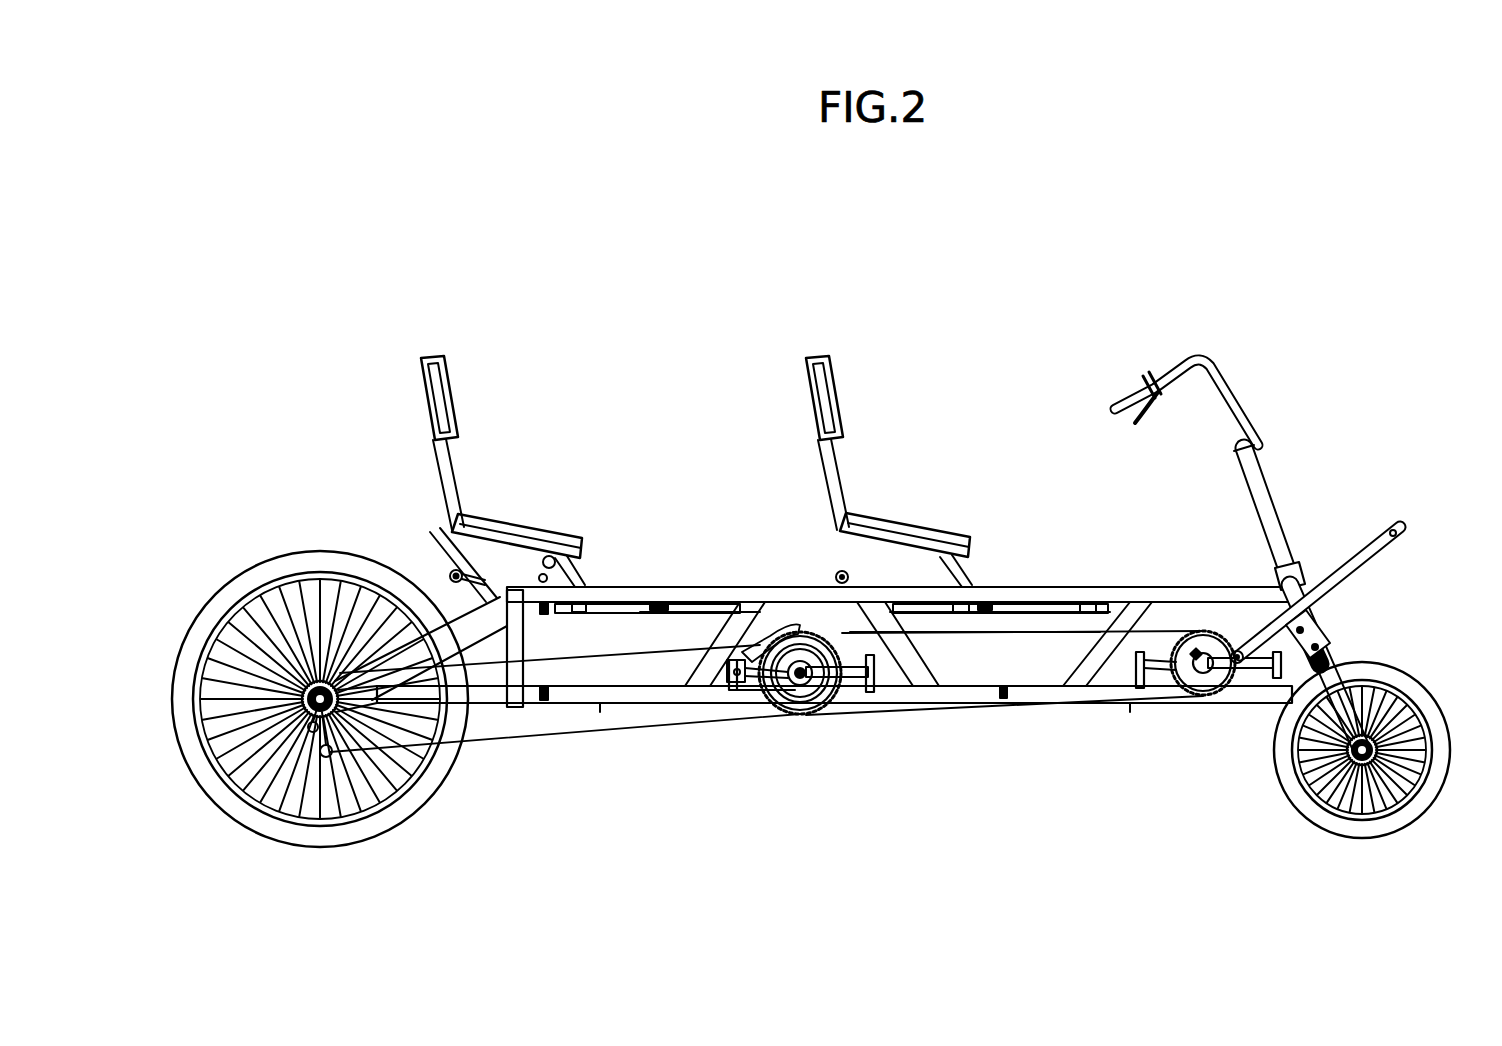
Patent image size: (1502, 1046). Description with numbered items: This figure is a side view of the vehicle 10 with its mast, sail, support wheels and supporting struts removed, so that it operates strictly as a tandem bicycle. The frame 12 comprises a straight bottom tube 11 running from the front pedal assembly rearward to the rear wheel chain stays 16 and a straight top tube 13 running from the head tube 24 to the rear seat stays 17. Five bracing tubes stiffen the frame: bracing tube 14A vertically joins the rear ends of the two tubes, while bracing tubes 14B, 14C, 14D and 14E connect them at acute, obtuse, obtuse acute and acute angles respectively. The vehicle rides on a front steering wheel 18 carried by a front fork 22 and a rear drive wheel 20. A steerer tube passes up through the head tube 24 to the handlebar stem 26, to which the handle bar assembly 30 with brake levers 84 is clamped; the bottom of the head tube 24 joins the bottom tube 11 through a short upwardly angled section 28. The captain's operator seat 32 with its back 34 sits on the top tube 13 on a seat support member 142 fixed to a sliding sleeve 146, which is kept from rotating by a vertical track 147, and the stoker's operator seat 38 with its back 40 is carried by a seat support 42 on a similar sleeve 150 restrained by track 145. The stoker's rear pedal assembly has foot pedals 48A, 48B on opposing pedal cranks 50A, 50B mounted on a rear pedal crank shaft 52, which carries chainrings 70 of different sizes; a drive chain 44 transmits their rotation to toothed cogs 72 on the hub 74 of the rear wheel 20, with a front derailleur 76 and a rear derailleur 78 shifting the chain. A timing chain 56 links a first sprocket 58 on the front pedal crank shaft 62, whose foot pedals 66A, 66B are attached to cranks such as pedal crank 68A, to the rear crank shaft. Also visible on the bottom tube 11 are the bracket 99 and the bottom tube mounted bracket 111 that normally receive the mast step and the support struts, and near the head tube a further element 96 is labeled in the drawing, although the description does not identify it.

The vehicle 10 is at (700, 295).
The bottom tube 11 is at (1030, 692).
The frame 12 is at (580, 706).
The top tube 13 is at (1052, 595).
The bracing tube 14A is at (515, 672).
The bracing tube 14B is at (742, 612).
The bracing tube 14C is at (783, 613).
The bracing tube 14D is at (913, 663).
The bracing tube 14E is at (1083, 667).
The rear wheel chain stays 16 is at (455, 698).
The rear seat stays 17 is at (460, 614).
The front steering wheel 18 is at (1436, 748).
The rear drive wheel 20 is at (192, 750).
The front fork 22 is at (1330, 700).
The head tube 24 is at (1320, 626).
The handlebar stem 26 is at (1275, 528).
The upwardly angled section 28 is at (1240, 678).
The handle bar assembly 30 is at (1225, 386).
The captain's operator seat 32 is at (878, 513).
The back 34 is at (830, 383).
The stoker's operator seat 38 is at (492, 524).
The back 40 is at (443, 400).
The seat support 42 is at (580, 576).
The drive chain 44 is at (637, 733).
The foot pedal 48A is at (880, 690).
The foot pedal 48B is at (724, 682).
The pedal crank 50A is at (835, 700).
The pedal crank 50B is at (768, 690).
The rear pedal crank shaft 52 is at (791, 703).
The timing chain 56 is at (1177, 628).
The first sprocket 58 is at (1215, 640).
The front pedal crank shaft 62 is at (1200, 690).
The foot pedal 66A is at (1283, 660).
The foot pedal 66B is at (1140, 690).
The pedal crank 68A is at (1238, 678).
The chainrings 70 is at (804, 703).
The toothed cogs 72 is at (338, 757).
The hub 74 is at (292, 703).
The front derailleur 76 is at (764, 620).
The rear derailleur 78 is at (311, 733).
The brake levers 84 is at (1156, 390).
The steering rod 96 is at (1392, 533).
The bracket 99 is at (748, 620).
The bottom tube mounted bracket 111 is at (912, 706).
The seat support member 142 is at (968, 567).
The track 145 is at (668, 603).
The sleeve 146 is at (985, 592).
The vertical track 147 is at (1098, 605).
The sleeve 150 is at (600, 598).